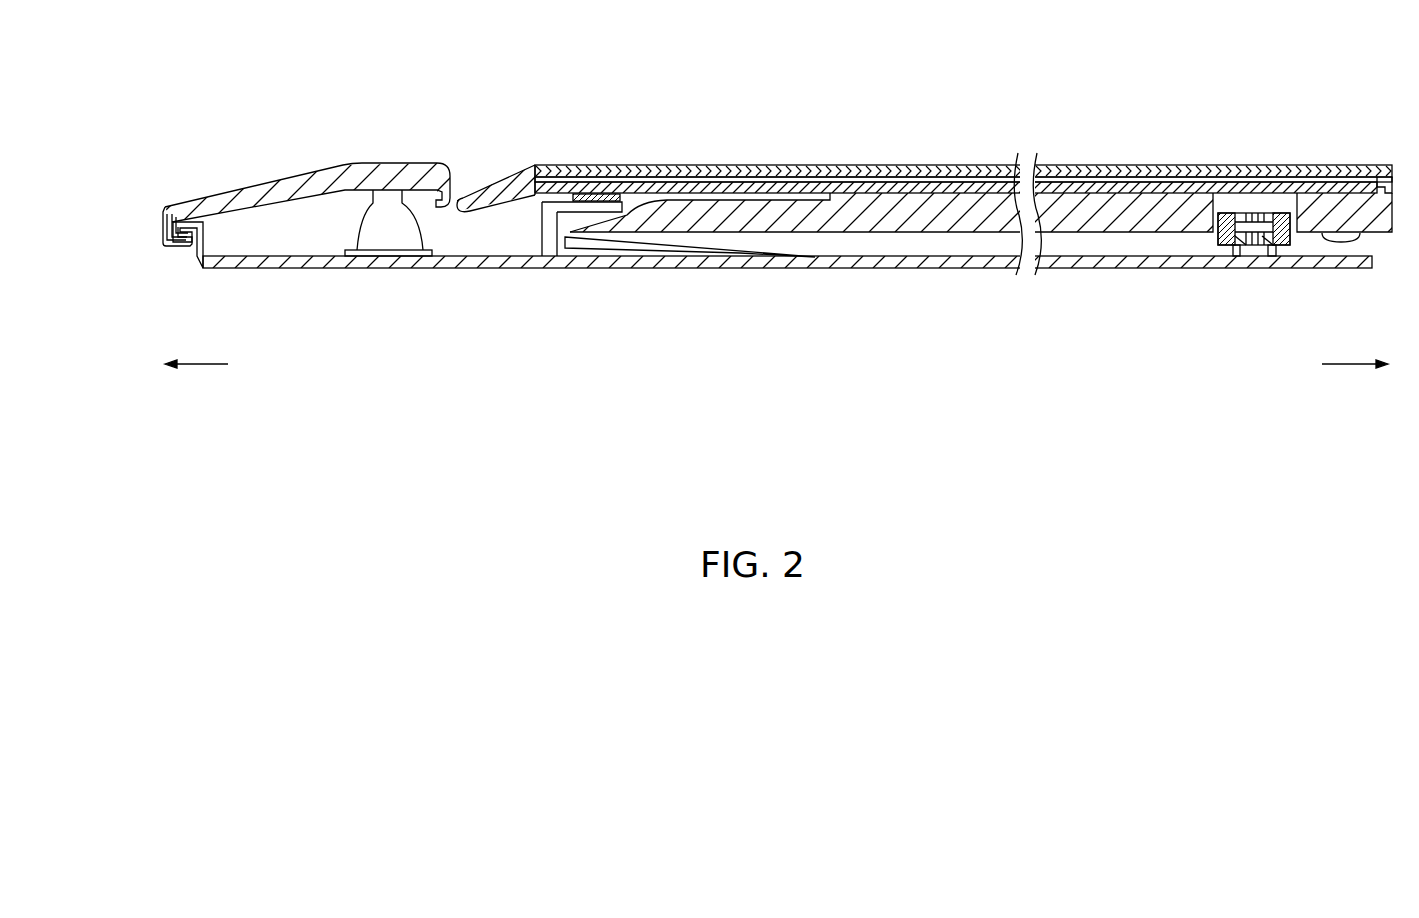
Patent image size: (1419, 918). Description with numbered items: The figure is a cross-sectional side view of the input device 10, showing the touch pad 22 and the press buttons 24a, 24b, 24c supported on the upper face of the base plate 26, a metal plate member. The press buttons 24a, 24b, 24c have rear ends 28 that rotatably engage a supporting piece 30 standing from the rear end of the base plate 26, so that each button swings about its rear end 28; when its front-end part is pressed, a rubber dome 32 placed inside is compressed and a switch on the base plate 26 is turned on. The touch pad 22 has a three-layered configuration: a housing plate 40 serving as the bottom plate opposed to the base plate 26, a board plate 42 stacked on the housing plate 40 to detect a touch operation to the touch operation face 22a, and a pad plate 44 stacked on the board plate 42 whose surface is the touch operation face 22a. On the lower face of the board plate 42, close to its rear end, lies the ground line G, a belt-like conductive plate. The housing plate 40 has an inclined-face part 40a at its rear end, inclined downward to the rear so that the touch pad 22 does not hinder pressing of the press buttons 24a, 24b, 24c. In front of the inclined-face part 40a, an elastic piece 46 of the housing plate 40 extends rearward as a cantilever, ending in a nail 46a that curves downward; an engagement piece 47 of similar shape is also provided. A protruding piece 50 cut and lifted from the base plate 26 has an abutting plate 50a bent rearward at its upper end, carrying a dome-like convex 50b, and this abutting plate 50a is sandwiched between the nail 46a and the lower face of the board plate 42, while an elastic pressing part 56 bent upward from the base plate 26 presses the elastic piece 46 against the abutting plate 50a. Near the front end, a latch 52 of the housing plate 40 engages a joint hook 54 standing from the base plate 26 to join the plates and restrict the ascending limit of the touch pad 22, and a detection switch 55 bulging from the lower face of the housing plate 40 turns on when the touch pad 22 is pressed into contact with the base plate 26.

The input device 10 is at (246, 46).
The touch pad 22 is at (958, 148).
The touch operation face 22a is at (920, 170).
The press button 24a is at (337, 171).
The press button 24b is at (337, 192).
The press button 24c is at (268, 180).
The base plate 26 is at (852, 274).
The rear end 28 is at (158, 222).
The supporting piece 30 is at (183, 242).
The rubber dome 32 is at (385, 240).
The housing plate 40 is at (975, 214).
The inclined-face part 40a is at (478, 193).
The board plate 42 is at (1132, 188).
The pad plate 44 is at (1080, 180).
The elastic piece 46 is at (901, 214).
The nail 46a is at (901, 261).
The engagement piece 47 is at (592, 226).
The protruding piece 50 is at (586, 214).
The abutting plate 50a is at (628, 203).
The dome-like convex 50b is at (590, 195).
The latch 52 is at (1233, 256).
The joint hook 54 is at (1267, 217).
The detection switch 55 is at (1342, 243).
The elastic pressing part 56 is at (642, 250).
The ground line G is at (552, 200).